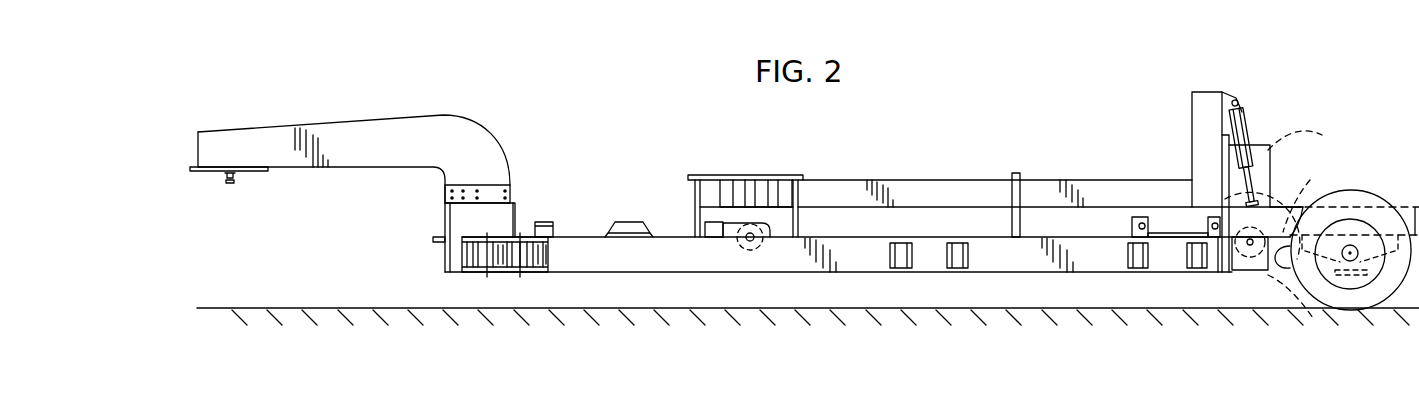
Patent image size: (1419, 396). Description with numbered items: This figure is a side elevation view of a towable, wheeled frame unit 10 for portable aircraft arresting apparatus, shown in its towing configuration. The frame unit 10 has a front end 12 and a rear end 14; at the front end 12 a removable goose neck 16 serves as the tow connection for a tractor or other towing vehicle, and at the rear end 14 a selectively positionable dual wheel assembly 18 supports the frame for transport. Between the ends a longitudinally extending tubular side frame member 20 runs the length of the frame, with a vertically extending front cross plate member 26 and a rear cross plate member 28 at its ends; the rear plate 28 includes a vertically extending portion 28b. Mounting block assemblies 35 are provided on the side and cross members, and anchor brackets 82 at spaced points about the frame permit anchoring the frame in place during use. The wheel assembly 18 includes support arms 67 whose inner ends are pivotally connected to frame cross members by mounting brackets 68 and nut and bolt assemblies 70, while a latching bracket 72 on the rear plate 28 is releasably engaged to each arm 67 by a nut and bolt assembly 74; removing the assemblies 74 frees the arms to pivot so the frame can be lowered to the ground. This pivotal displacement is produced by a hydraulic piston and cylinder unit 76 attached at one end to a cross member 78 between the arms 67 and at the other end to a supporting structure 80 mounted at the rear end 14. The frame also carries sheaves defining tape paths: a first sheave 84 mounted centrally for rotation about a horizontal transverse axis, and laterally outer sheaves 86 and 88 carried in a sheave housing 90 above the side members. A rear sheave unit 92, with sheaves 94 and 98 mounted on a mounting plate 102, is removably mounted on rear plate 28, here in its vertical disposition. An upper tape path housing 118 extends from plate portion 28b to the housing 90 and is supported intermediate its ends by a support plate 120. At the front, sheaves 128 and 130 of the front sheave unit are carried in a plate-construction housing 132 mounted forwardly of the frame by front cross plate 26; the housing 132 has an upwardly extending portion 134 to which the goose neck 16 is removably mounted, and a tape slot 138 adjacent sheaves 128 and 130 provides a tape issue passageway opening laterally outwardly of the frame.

The towable wheeled frame unit 10 is at (1145, 58).
The front end 12 is at (528, 157).
The rear end 14 is at (1285, 100).
The goose neck 16 is at (345, 125).
The dual wheel assembly 18 is at (1373, 167).
The side frame member 20 is at (858, 263).
The front cross plate member 26 is at (515, 218).
The rear cross plate member 28 is at (1222, 263).
The vertically extending portion 28b is at (1222, 143).
The mounting block assembly 35 is at (553, 228).
The support arm 67 is at (1287, 207).
The mounting bracket 68 is at (1125, 223).
The nut and bolt assembly 70 is at (1148, 225).
The latching bracket 72 is at (1202, 229).
The nut and bolt assembly 74 is at (1217, 220).
The hydraulic piston and cylinder unit 76 is at (1247, 115).
The cross member 78 is at (1265, 230).
The supporting structure 80 is at (1200, 105).
The anchor bracket 82 is at (957, 252).
The first sheave 84 is at (757, 250).
The laterally outer sheave 86 is at (770, 193).
The laterally outer sheave 88 is at (730, 190).
The sheave housing 90 is at (753, 168).
The rear sheave unit 92 is at (1275, 150).
The sheave 94 is at (1305, 140).
The sheave 98 is at (1293, 310).
The mounting plate 102 is at (1232, 257).
The upper tape path housing 118 is at (967, 187).
The support plate 120 is at (1018, 193).
The sheave 128 is at (547, 257).
The sheave 130 is at (482, 247).
The front sheave housing 132 is at (428, 250).
The upwardly extending portion 134 is at (447, 208).
The tape slot 138 is at (502, 267).